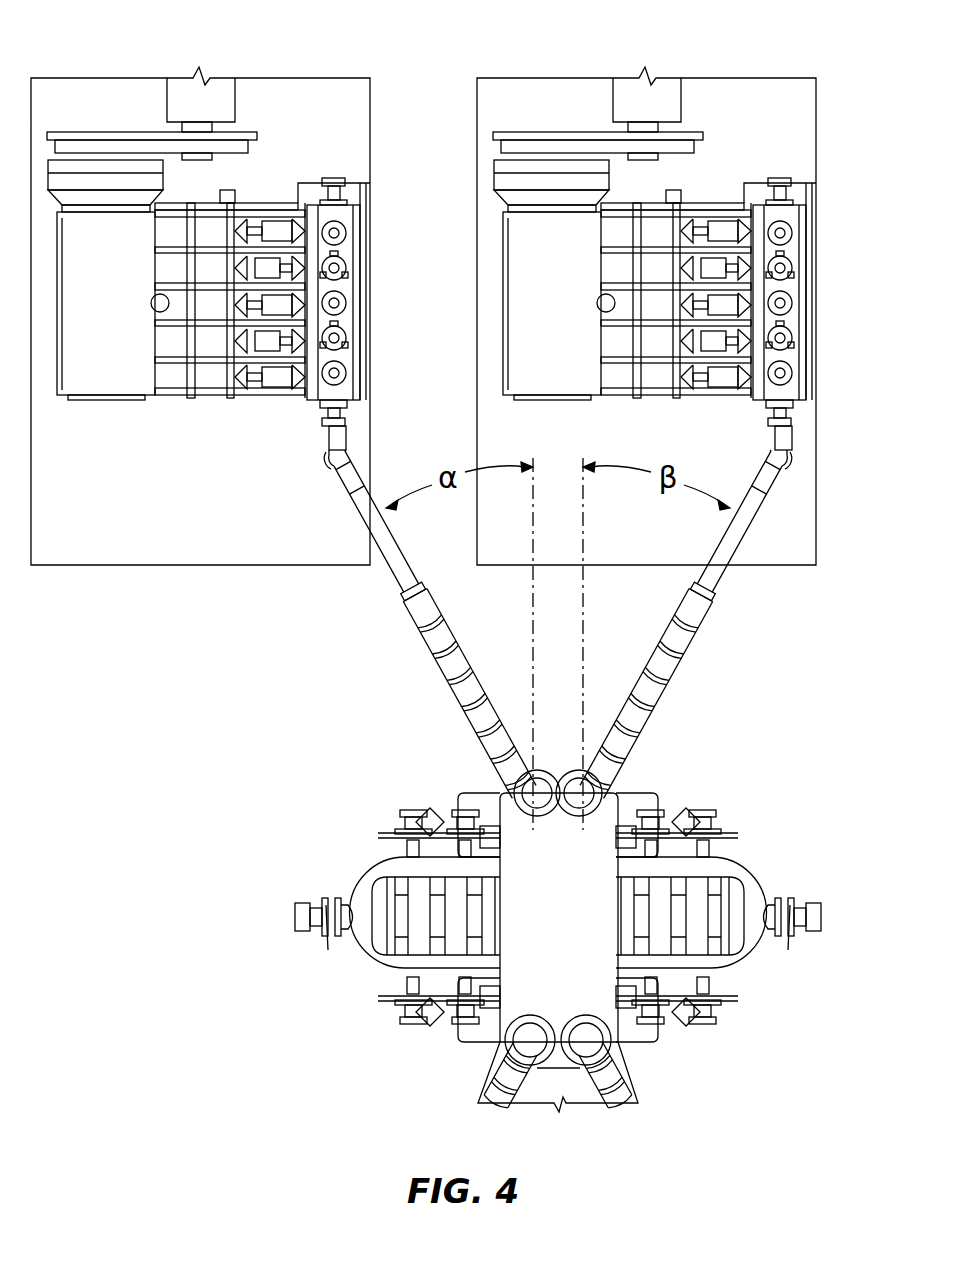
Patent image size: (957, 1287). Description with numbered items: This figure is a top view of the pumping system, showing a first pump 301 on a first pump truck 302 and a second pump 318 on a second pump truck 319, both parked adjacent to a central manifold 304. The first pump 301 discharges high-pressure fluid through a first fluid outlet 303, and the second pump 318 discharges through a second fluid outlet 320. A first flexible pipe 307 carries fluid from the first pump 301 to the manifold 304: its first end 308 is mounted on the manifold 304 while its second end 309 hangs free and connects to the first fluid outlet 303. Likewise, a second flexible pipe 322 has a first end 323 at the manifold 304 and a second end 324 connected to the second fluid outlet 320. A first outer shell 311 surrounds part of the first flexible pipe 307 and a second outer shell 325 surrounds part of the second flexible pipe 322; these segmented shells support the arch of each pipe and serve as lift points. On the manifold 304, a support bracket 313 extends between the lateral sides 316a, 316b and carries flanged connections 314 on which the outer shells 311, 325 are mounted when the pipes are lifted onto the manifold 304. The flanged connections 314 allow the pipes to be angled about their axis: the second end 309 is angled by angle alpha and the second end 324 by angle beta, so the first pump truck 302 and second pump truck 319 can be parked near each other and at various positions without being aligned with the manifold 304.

The first pump 301 is at (241, 299).
The first pump truck 302 is at (333, 152).
The first fluid outlet 303 is at (328, 440).
The manifold 304 is at (574, 932).
The first flexible pipe 307 is at (370, 512).
The first end 308 is at (512, 790).
The second end 309 is at (345, 471).
The first outer shell 311 is at (410, 612).
The support bracket 313 is at (532, 903).
The flanged connection 314 is at (505, 1048).
The lateral side 316a is at (400, 798).
The lateral side 316b is at (400, 1036).
The second pump 318 is at (687, 299).
The second pump truck 319 is at (777, 152).
The second fluid outlet 320 is at (790, 440).
The second flexible pipe 322 is at (748, 512).
The first end 323 is at (604, 790).
The second end 324 is at (772, 471).
The second outer shell 325 is at (706, 612).